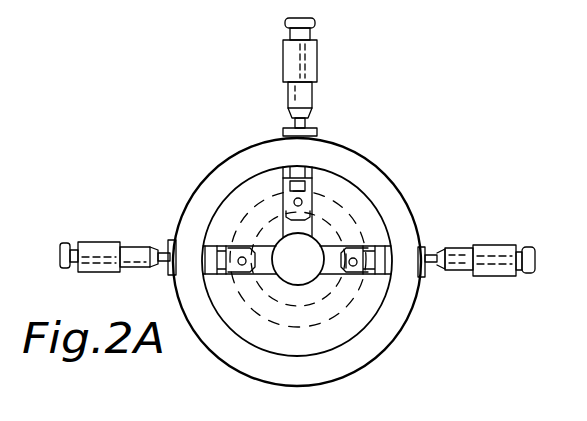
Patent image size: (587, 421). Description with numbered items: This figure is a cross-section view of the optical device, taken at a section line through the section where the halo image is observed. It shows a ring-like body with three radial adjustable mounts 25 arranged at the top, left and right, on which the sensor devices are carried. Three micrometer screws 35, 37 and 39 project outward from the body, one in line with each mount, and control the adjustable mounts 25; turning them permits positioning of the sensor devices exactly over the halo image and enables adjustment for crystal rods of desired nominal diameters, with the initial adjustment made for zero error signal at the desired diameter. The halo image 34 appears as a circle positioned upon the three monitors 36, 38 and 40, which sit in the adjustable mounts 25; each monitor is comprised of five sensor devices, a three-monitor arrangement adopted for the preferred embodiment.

The adjustable mounts 25 is at (283, 180).
The halo image 34 is at (233, 183).
The micrometer screw 35 is at (283, 52).
The monitor 36 is at (240, 266).
The micrometer screw 37 is at (103, 248).
The monitor 38 is at (303, 199).
The micrometer screw 39 is at (493, 276).
The monitor 40 is at (356, 267).